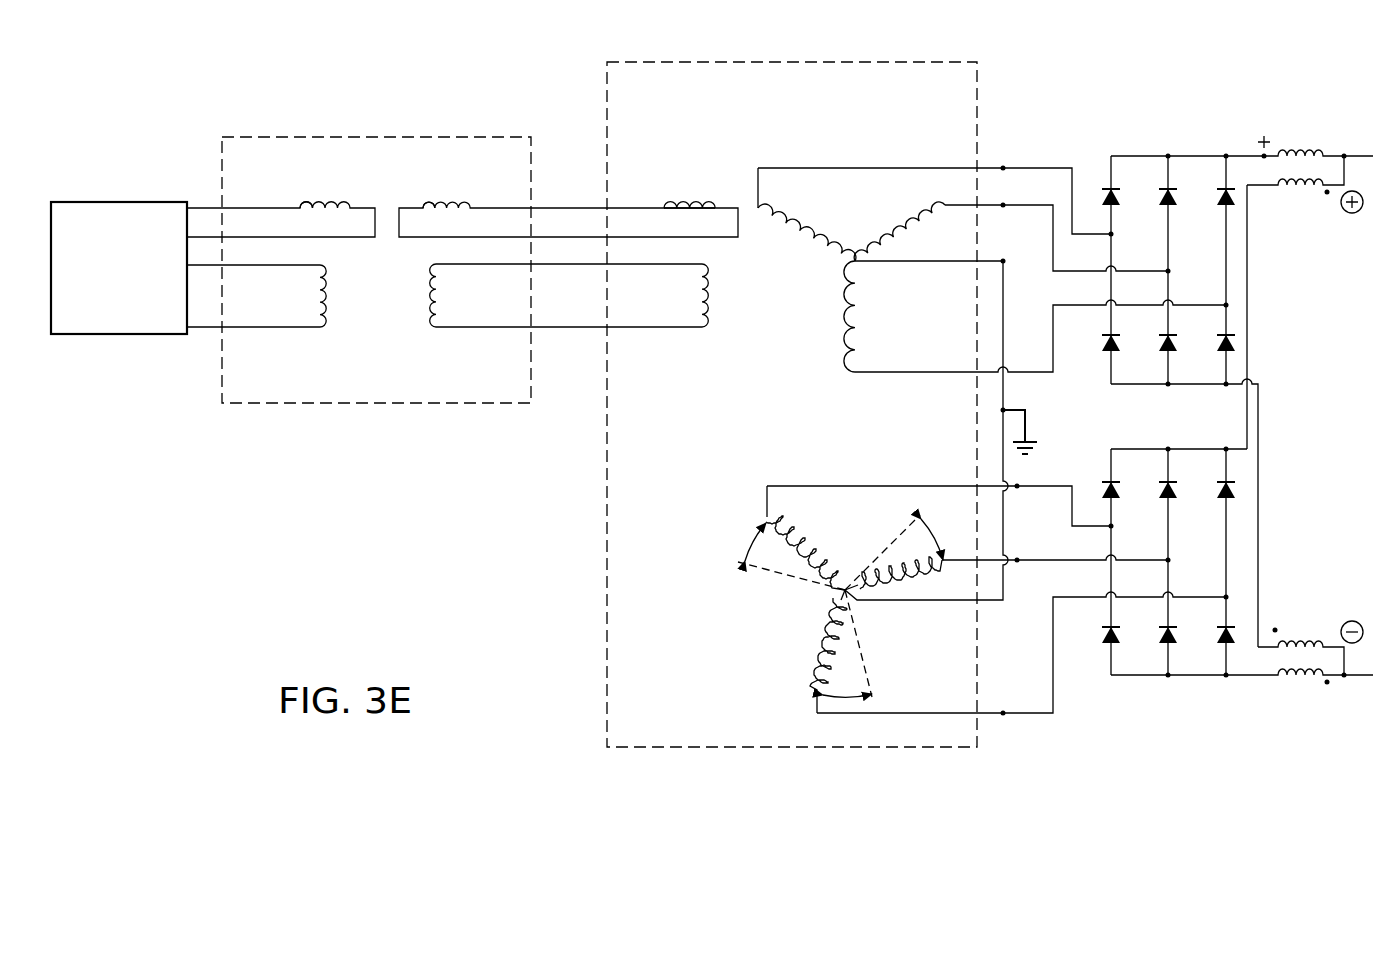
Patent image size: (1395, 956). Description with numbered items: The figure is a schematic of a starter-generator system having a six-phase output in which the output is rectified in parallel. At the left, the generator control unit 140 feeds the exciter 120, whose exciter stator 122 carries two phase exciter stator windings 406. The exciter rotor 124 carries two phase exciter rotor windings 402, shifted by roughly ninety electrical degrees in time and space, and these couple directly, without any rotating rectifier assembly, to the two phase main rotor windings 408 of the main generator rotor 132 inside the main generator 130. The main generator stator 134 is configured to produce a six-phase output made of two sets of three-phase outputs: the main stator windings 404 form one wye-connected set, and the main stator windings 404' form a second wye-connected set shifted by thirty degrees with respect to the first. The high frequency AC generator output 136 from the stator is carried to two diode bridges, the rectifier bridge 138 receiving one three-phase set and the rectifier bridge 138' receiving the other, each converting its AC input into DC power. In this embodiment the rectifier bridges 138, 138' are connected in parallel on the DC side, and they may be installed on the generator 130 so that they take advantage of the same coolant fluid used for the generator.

The generator control unit 140 is at (118, 202).
The exciter 120 is at (356, 137).
The exciter stator 122 is at (315, 200).
The exciter rotor 124 is at (458, 200).
The exciter stator windings 406 is at (320, 214).
The exciter rotor windings 402 is at (441, 214).
The main rotor windings 408 is at (688, 214).
The main generator 130 is at (785, 62).
The main generator rotor 132 is at (657, 170).
The main generator stator 134 is at (851, 235).
The main stator windings 404 is at (851, 281).
The main stator windings 404' is at (844, 599).
The generator output 136 is at (1036, 150).
The rectifier bridge 138 is at (1237, 351).
The rectifier bridge 138' is at (1237, 618).